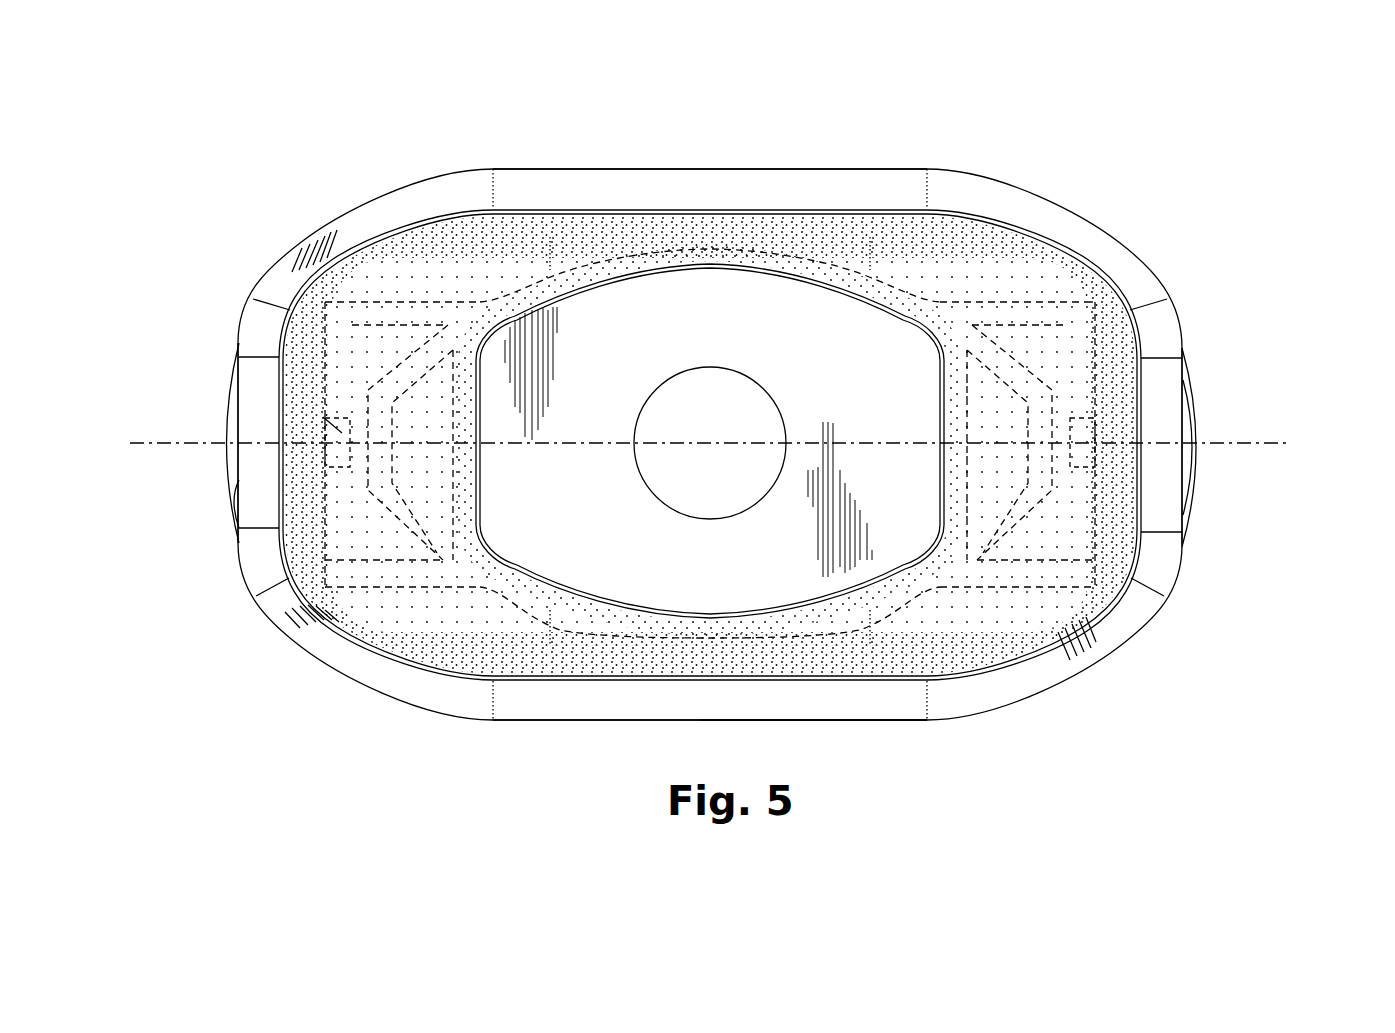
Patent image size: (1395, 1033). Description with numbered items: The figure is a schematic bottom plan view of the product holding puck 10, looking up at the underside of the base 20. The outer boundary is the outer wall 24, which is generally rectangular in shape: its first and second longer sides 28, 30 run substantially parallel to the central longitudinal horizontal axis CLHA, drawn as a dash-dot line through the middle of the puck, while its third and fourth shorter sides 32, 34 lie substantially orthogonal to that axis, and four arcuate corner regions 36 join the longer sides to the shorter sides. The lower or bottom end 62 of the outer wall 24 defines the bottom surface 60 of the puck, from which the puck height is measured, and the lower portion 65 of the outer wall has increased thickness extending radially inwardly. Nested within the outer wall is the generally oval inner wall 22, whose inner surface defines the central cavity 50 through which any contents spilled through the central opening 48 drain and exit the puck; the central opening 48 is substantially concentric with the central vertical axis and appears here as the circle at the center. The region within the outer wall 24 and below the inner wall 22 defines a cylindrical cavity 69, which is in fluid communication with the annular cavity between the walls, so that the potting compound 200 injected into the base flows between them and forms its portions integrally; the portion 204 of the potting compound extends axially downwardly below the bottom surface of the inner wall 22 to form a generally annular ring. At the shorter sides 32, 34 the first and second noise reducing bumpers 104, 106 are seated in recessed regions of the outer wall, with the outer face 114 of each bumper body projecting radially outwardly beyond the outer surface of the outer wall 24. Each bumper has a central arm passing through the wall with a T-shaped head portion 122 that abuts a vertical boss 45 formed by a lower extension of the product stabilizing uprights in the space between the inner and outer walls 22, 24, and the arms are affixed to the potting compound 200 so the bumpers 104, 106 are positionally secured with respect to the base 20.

The product holding puck 10 is at (780, 407).
The base 20 is at (1215, 314).
The inner wall 22 is at (836, 245).
The outer wall 24 is at (647, 749).
The first longer side 28 is at (616, 744).
The second longer side 30 is at (704, 149).
The third shorter side 32 is at (1203, 548).
The fourth shorter side 34 is at (224, 321).
The arcuate corner regions 36 is at (353, 210).
The vertical boss 45 is at (362, 448).
The central opening 48 is at (685, 382).
The central cavity 50 is at (900, 526).
The bottom surface 60 is at (937, 700).
The lower end of the outer wall 62 is at (877, 703).
The lower portion of the outer wall 65 is at (279, 565).
The cylindrical cavity 69 is at (411, 640).
The first noise reducing bumper 104 is at (1217, 428).
The second noise reducing bumper 106 is at (210, 512).
The outer face of the bumper body 114 is at (1193, 397).
The T-shaped head portion 122 is at (323, 417).
The potting compound 200 is at (455, 657).
The potting compound portion 204 is at (507, 637).
The central longitudinal horizontal axis CLHA is at (1270, 445).